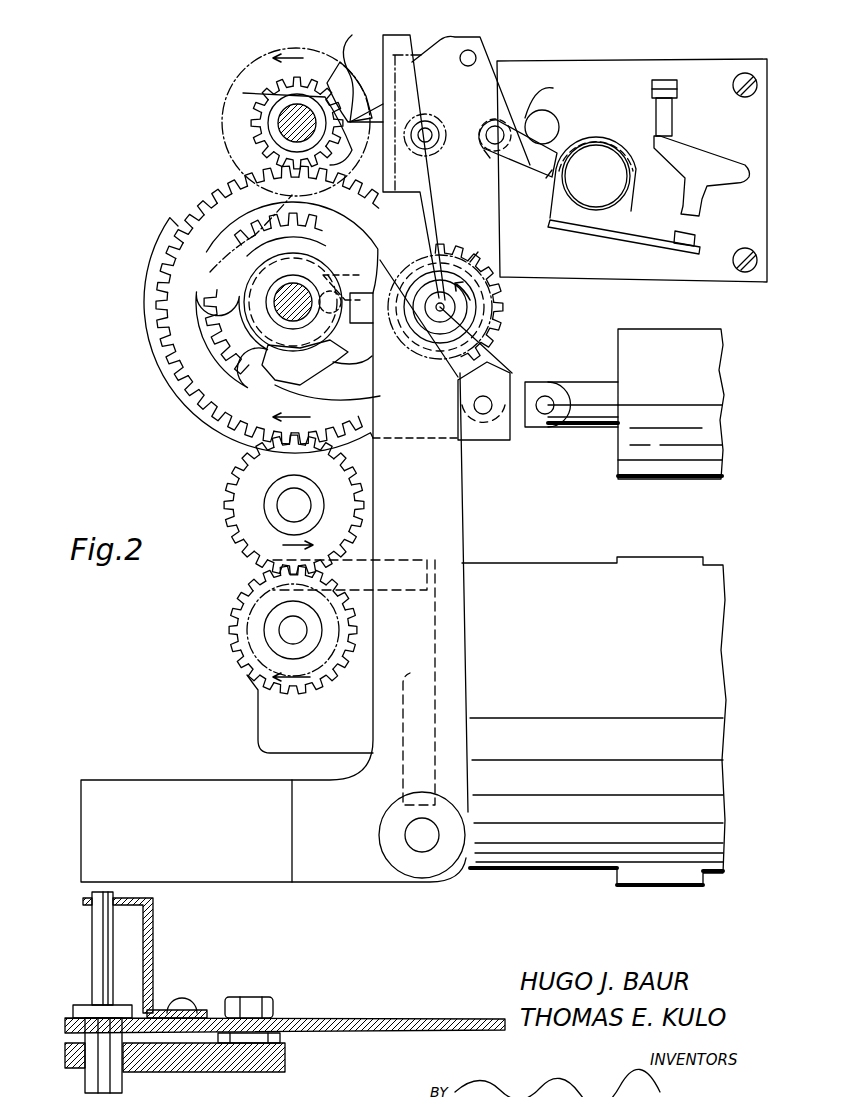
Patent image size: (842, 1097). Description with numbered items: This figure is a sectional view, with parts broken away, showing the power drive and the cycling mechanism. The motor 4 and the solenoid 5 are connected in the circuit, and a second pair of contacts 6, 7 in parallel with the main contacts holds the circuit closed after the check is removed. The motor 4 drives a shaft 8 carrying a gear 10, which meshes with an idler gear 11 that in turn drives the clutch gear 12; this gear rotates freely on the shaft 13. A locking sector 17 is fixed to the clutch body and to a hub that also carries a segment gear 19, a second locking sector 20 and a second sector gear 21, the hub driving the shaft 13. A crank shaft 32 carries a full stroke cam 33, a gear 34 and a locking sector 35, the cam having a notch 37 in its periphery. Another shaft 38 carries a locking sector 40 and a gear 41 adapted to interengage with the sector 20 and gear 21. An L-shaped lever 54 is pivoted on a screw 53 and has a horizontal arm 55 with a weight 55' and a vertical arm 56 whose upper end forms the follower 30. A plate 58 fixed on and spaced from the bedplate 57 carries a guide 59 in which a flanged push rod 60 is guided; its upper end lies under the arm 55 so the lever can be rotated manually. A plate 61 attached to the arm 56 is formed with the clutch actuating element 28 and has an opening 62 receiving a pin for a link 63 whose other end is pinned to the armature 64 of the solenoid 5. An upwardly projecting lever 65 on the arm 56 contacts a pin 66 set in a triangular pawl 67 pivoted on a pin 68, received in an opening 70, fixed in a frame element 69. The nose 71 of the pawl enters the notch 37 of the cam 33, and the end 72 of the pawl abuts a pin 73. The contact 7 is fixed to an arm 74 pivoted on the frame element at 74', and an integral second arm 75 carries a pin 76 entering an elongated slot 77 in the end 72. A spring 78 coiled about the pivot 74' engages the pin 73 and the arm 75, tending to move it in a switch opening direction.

The motor 4 is at (556, 706).
The solenoid 5 is at (678, 404).
The contact 6 is at (704, 224).
The contact 7 is at (698, 241).
The shaft 8 is at (295, 630).
The gear 10 is at (236, 646).
The idler gear 11 is at (230, 490).
The clutch gear 12 is at (172, 370).
The shaft 13 is at (290, 312).
The locking sector 17 is at (290, 272).
The segment gear 19 is at (187, 224).
The second locking sector 20 is at (347, 352).
The second sector gear 21 is at (245, 376).
The actuating element 28 is at (357, 272).
The follower 30 is at (409, 323).
The crank shaft 32 is at (280, 127).
The full stroke cam 33 is at (360, 73).
The gear 34 is at (283, 82).
The locking sector 35 is at (250, 92).
The notch 37 is at (366, 86).
The shaft 38 is at (447, 313).
The locking sector 40 is at (472, 300).
The gear 41 is at (470, 262).
The screw 53 is at (415, 835).
The L-shaped lever 54 is at (471, 537).
The horizontal arm 55 is at (273, 617).
The weight 55' is at (247, 848).
The vertical arm 56 is at (466, 512).
The bedplate 57 is at (198, 1072).
The plate 58 is at (300, 1019).
The guide 59 is at (153, 973).
The flanged push rod 60 is at (100, 977).
The plate 61 is at (500, 366).
The opening 62 is at (498, 386).
The link 63 is at (518, 428).
The armature 64 is at (577, 428).
The lever 65 is at (428, 185).
The pin 66 is at (478, 55).
The triangular pawl 67 is at (480, 92).
The pin 68 is at (432, 134).
The frame element 69 is at (637, 65).
The opening 70 is at (428, 124).
The nose 71 is at (388, 105).
The end 72 is at (527, 113).
The pin 73 is at (560, 114).
The arm 74 is at (624, 244).
The pivot 74' is at (602, 162).
The second arm 75 is at (528, 160).
The pin 76 is at (489, 160).
The elongated slot 77 is at (484, 125).
The spring 78 is at (570, 134).